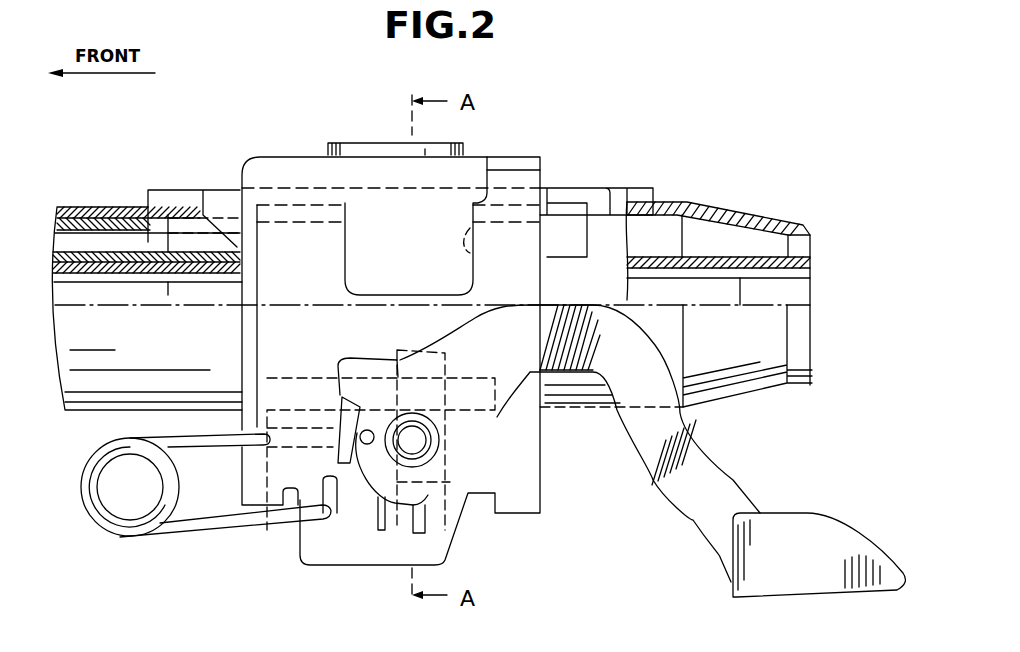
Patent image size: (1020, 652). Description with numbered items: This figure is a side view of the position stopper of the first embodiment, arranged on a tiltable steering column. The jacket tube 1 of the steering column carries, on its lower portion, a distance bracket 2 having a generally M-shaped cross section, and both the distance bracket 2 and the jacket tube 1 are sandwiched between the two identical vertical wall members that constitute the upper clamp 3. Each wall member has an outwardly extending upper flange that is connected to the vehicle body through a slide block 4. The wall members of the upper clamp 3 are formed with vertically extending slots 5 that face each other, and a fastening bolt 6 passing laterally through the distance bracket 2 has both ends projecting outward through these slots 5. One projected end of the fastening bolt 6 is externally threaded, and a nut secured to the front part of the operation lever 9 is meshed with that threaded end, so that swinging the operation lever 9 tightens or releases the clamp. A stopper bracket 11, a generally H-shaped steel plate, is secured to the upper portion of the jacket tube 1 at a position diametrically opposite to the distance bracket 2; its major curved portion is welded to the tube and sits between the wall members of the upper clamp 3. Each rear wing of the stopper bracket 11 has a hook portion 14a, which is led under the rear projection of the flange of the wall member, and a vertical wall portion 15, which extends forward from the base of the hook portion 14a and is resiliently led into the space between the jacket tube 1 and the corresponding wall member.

The jacket tube 1 is at (710, 196).
The distance bracket 2 is at (293, 392).
The upper clamp 3 is at (293, 156).
The slide block 4 is at (364, 143).
The vertically extending slot 5 is at (385, 532).
The fastening bolt 6 is at (417, 440).
The operation lever 9 is at (713, 483).
The stopper bracket 11 is at (222, 178).
The hook portion 14a is at (547, 181).
The vertical wall portion 15 is at (493, 233).